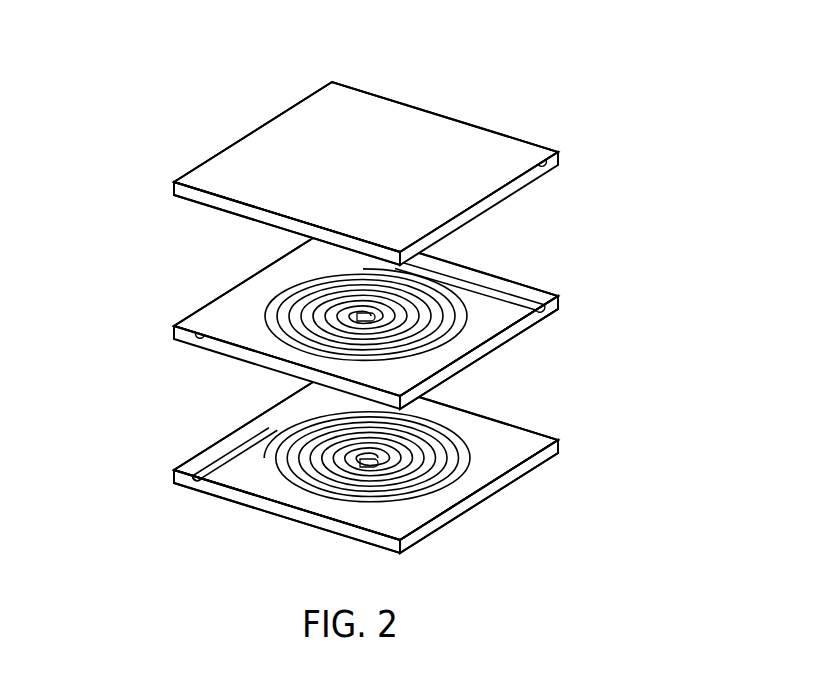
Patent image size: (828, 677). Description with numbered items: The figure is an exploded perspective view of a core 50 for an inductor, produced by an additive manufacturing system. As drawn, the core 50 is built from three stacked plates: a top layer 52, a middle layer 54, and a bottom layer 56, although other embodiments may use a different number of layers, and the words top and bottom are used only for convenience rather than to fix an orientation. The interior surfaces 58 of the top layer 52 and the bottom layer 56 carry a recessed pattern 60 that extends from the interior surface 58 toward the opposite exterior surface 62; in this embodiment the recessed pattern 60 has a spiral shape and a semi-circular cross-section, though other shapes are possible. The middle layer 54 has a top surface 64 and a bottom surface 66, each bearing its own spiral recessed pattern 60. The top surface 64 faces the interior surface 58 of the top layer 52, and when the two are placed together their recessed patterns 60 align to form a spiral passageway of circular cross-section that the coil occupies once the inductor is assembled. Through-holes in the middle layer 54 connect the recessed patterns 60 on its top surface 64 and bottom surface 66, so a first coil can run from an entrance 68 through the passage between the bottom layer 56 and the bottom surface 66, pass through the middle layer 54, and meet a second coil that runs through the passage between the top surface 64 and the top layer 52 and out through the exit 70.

The core 50 is at (368, 307).
The top layer 52 is at (490, 129).
The middle layer 54 is at (537, 283).
The bottom layer 56 is at (541, 435).
The interior surface 58 is at (208, 220).
The recessed pattern 60 is at (543, 181).
The exterior surface 62 is at (388, 122).
The top surface 64 is at (212, 313).
The bottom surface 66 is at (508, 352).
The entrance 68 is at (196, 494).
The exit 70 is at (555, 323).